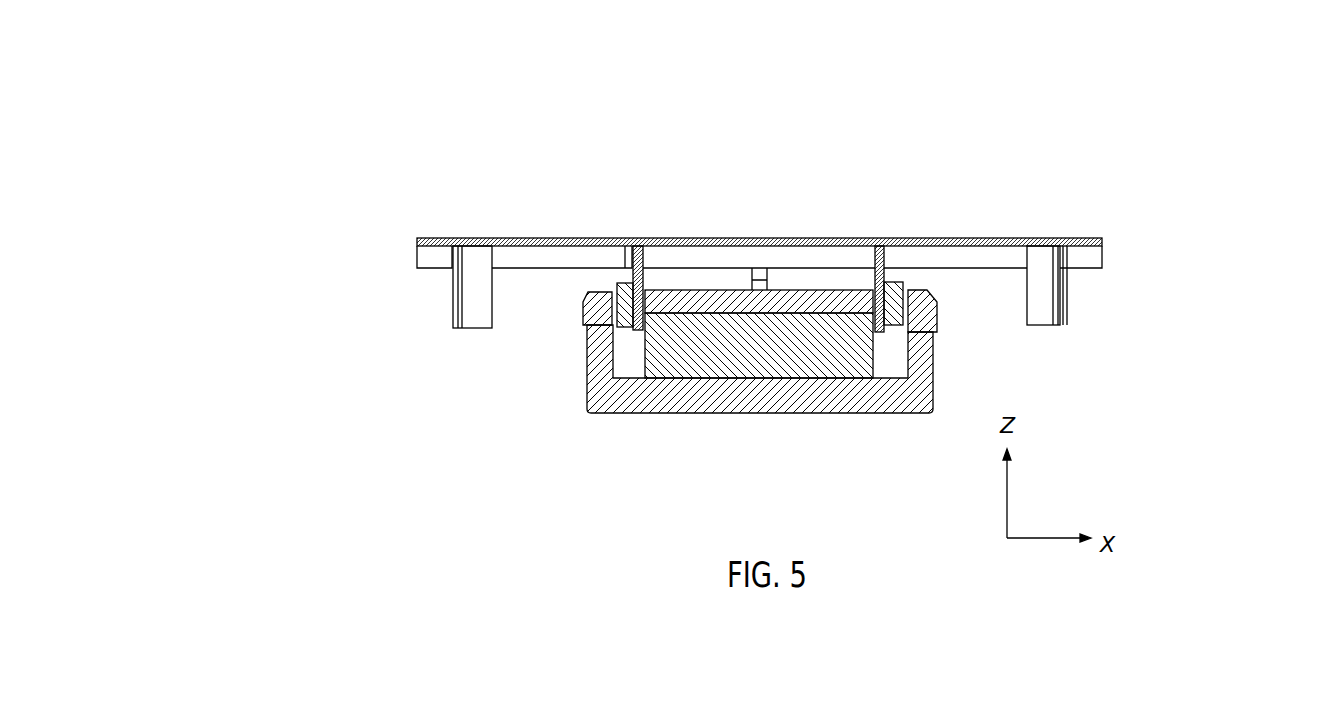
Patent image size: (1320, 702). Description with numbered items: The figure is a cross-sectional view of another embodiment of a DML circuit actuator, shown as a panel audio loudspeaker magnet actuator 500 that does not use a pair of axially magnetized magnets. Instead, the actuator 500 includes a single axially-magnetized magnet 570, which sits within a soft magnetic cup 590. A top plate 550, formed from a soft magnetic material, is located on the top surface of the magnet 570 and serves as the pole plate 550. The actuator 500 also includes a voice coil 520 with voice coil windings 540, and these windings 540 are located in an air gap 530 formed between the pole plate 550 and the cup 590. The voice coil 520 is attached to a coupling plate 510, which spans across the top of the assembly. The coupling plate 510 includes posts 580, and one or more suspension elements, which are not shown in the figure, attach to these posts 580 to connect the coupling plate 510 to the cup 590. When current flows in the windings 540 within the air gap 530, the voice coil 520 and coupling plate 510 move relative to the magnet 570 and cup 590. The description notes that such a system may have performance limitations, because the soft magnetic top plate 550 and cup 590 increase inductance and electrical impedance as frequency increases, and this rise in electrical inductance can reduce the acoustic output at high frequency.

The panel audio loudspeaker magnet actuator 500 is at (345, 112).
The coupling plate 510 is at (417, 240).
The voice coil 520 is at (630, 281).
The air gap 530 is at (615, 306).
The voice coil windings 540 is at (583, 310).
The top plate 550 is at (855, 305).
The axially-magnetized magnet 570 is at (842, 358).
The posts 580 is at (477, 267).
The soft magnetic cup 590 is at (923, 343).